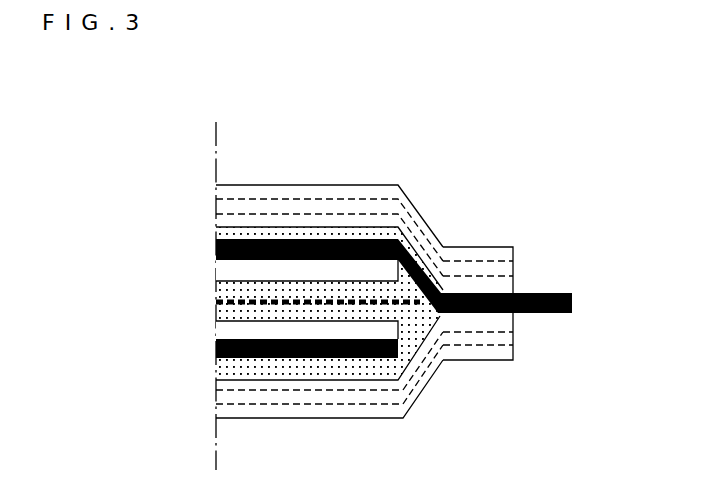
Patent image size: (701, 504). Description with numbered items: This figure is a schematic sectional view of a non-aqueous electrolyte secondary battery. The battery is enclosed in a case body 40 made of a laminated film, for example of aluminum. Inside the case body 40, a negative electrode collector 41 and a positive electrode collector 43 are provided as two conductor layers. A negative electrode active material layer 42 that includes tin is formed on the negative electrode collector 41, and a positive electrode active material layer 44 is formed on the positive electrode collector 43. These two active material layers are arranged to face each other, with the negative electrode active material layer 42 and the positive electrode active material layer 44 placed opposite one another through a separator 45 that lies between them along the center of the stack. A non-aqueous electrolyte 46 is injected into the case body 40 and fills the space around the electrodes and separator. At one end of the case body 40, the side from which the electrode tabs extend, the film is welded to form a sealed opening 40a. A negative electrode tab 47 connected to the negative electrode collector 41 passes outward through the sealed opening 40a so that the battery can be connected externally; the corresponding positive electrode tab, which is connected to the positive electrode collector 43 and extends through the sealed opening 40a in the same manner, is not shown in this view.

The case body 40 is at (372, 205).
The sealed opening 40a is at (482, 252).
The negative electrode collector 41 is at (216, 249).
The negative electrode active material layer 42 is at (228, 269).
The positive electrode collector 43 is at (216, 357).
The positive electrode active material layer 44 is at (232, 334).
The separator 45 is at (218, 308).
The non-aqueous electrolyte 46 is at (412, 342).
The negative electrode tab 47 is at (555, 293).